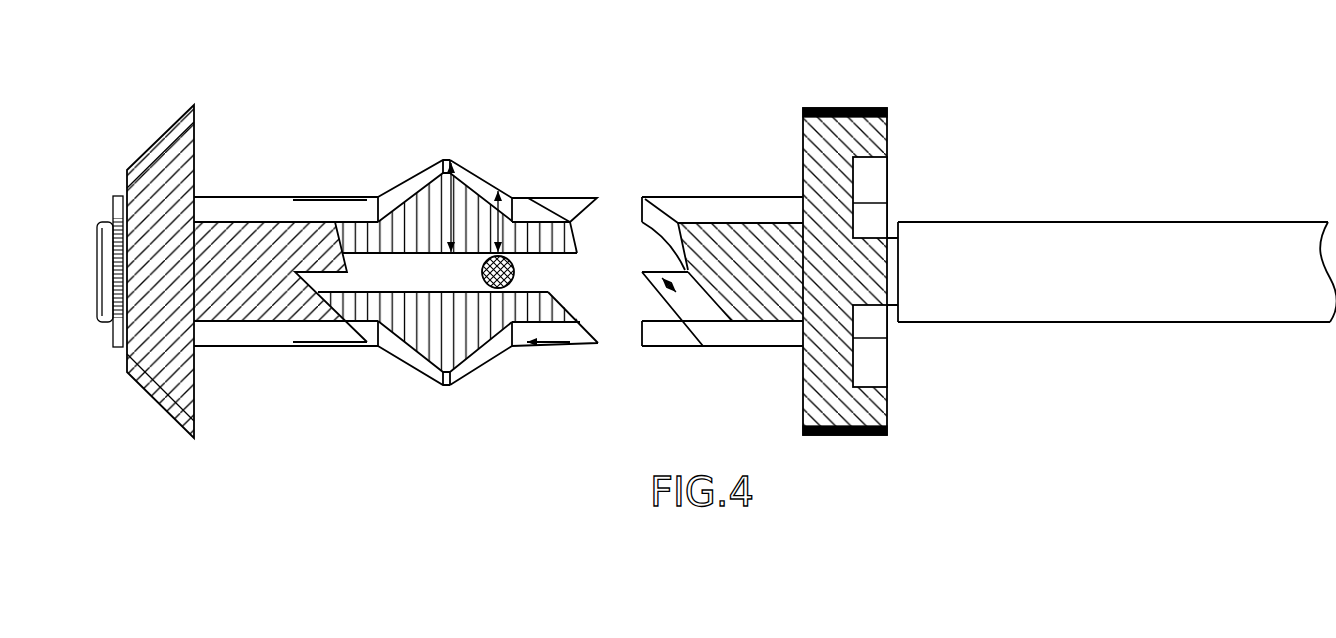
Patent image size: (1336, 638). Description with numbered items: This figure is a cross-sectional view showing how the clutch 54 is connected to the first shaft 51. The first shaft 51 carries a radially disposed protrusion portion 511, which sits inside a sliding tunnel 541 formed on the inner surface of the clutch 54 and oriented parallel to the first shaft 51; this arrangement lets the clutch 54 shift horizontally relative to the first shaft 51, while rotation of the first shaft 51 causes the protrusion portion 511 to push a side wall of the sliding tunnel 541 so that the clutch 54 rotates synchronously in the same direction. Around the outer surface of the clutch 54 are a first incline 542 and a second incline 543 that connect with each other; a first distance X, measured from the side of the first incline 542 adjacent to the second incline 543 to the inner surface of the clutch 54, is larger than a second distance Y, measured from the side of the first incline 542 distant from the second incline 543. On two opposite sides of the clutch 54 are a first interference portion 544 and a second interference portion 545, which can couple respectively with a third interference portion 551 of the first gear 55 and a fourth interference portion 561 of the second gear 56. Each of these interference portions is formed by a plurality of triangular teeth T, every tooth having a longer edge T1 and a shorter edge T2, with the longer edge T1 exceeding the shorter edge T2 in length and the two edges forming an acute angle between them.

The first shaft 51 is at (1048, 237).
The protrusion portion 511 is at (482, 273).
The clutch 54 is at (476, 246).
The sliding tunnel 541 is at (525, 275).
The first incline 542 is at (400, 183).
The second incline 543 is at (480, 175).
The first interference portion 544 is at (558, 205).
The second interference portion 545 is at (345, 208).
The first gear 55 is at (848, 117).
The third interference portion 551 is at (650, 218).
The second gear 56 is at (148, 158).
The fourth interference portion 561 is at (347, 270).
The first distance X is at (442, 196).
The second distance Y is at (514, 215).
The teeth T is at (641, 275).
The longer edge T1 is at (668, 292).
The shorter edge T2 is at (672, 277).